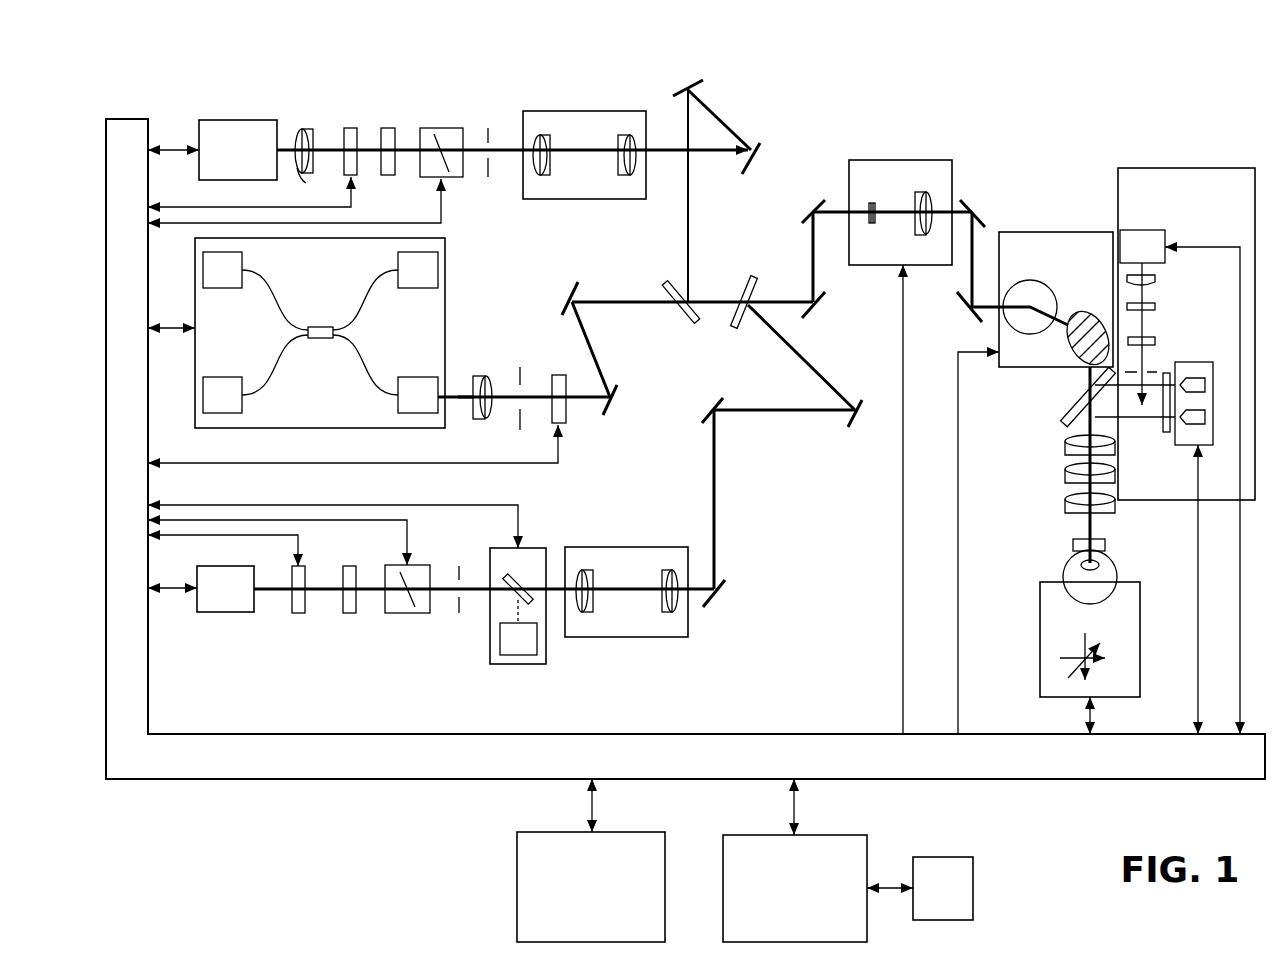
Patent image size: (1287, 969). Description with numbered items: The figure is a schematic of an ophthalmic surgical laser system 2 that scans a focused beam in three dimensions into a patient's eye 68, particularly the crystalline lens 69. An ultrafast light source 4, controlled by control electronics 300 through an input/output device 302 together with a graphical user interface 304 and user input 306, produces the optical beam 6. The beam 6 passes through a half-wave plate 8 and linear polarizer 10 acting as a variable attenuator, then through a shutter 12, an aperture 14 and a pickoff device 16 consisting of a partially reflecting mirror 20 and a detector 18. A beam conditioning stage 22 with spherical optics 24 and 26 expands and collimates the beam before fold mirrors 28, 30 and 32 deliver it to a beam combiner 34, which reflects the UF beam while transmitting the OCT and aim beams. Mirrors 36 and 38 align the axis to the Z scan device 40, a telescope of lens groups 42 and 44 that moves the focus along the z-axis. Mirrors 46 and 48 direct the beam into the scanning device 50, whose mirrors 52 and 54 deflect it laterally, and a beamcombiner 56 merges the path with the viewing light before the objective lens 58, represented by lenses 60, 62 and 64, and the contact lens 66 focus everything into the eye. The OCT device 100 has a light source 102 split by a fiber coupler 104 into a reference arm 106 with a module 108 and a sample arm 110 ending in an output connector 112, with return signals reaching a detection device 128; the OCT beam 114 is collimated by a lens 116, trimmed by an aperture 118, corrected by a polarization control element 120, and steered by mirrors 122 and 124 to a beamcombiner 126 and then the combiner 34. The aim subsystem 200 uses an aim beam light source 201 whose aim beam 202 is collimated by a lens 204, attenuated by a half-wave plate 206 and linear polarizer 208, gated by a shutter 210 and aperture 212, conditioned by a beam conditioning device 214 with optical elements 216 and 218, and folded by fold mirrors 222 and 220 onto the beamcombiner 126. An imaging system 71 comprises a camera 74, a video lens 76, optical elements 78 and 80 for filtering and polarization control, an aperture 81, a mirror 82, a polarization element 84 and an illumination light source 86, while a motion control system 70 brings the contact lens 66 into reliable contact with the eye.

The system 2 is at (1150, 97).
The ultrafast light source 4 is at (226, 614).
The optical beam 6 is at (272, 594).
The half-wave plate 8 is at (298, 616).
The linear polarizer 10 is at (350, 616).
The shutter 12 is at (408, 616).
The aperture 14 is at (458, 615).
The pickoff device 16 is at (518, 666).
The detector 18 is at (508, 650).
The partially reflecting mirror 20 is at (528, 580).
The beam conditioning stage 22 is at (625, 640).
The spherical optic 24 is at (596, 572).
The spherical optic 26 is at (660, 600).
The fold mirror 28 is at (723, 595).
The fold mirror 30 is at (712, 404).
The fold mirror 32 is at (856, 418).
The beam combiner 34 is at (742, 284).
The mirror 36 is at (822, 304).
The mirror 38 is at (806, 212).
The Z scan device 40 is at (928, 160).
The lens group 42 is at (871, 201).
The lens group 44 is at (914, 232).
The mirror 46 is at (977, 209).
The mirror 48 is at (961, 312).
The scanning device 50 is at (1068, 231).
The mirror 52 is at (1054, 292).
The mirror 54 is at (1070, 345).
The beamcombiner 56 is at (1072, 412).
The objective lens 58 is at (978, 483).
The lens 60 is at (1064, 443).
The lens 62 is at (1064, 473).
The lens 64 is at (1064, 502).
The contact lens 66 is at (1071, 545).
The eye 68 is at (1117, 565).
The crystalline lens 69 is at (1081, 565).
The motion control system 70 is at (1141, 645).
The imaging system 71 is at (1204, 200).
The camera 74 is at (1145, 228).
The video lens 76 is at (1158, 278).
The optical element 78 is at (1158, 306).
The optical element 80 is at (1158, 340).
The aperture 81 is at (1158, 370).
The mirror 82 is at (1154, 420).
The polarization element 84 is at (1163, 438).
The illumination light source 86 is at (1213, 380).
The OCT device 100 is at (306, 272).
The light source 102 is at (236, 405).
The fiber coupler 104 is at (321, 340).
The reference arm 106 is at (362, 300).
The module 108 is at (432, 280).
The sample arm 110 is at (363, 350).
The output connector 112 is at (432, 405).
The OCT beam 114 is at (455, 392).
The lens 116 is at (478, 422).
The aperture 118 is at (516, 366).
The polarization control element 120 is at (568, 420).
The mirror 122 is at (612, 410).
The mirror 124 is at (565, 296).
The beamcombiner 126 is at (684, 318).
The detection device 128 is at (236, 280).
The aim subsystem 200 is at (219, 76).
The aim beam light source 201 is at (224, 175).
The aim beam 202 is at (298, 126).
The lens 204 is at (306, 190).
The half-wave plate 206 is at (350, 126).
The linear polarizer 208 is at (388, 126).
The shutter 210 is at (443, 127).
The aperture 212 is at (487, 180).
The beam conditioning device 214 is at (610, 200).
The optical element 216 is at (553, 146).
The optical element 218 is at (614, 170).
The fold mirror 220 is at (764, 150).
The fold mirror 222 is at (678, 90).
The control electronics 300 is at (577, 922).
The input/output device 302 is at (700, 764).
The graphical user interface 304 is at (781, 912).
The user input 306 is at (929, 912).